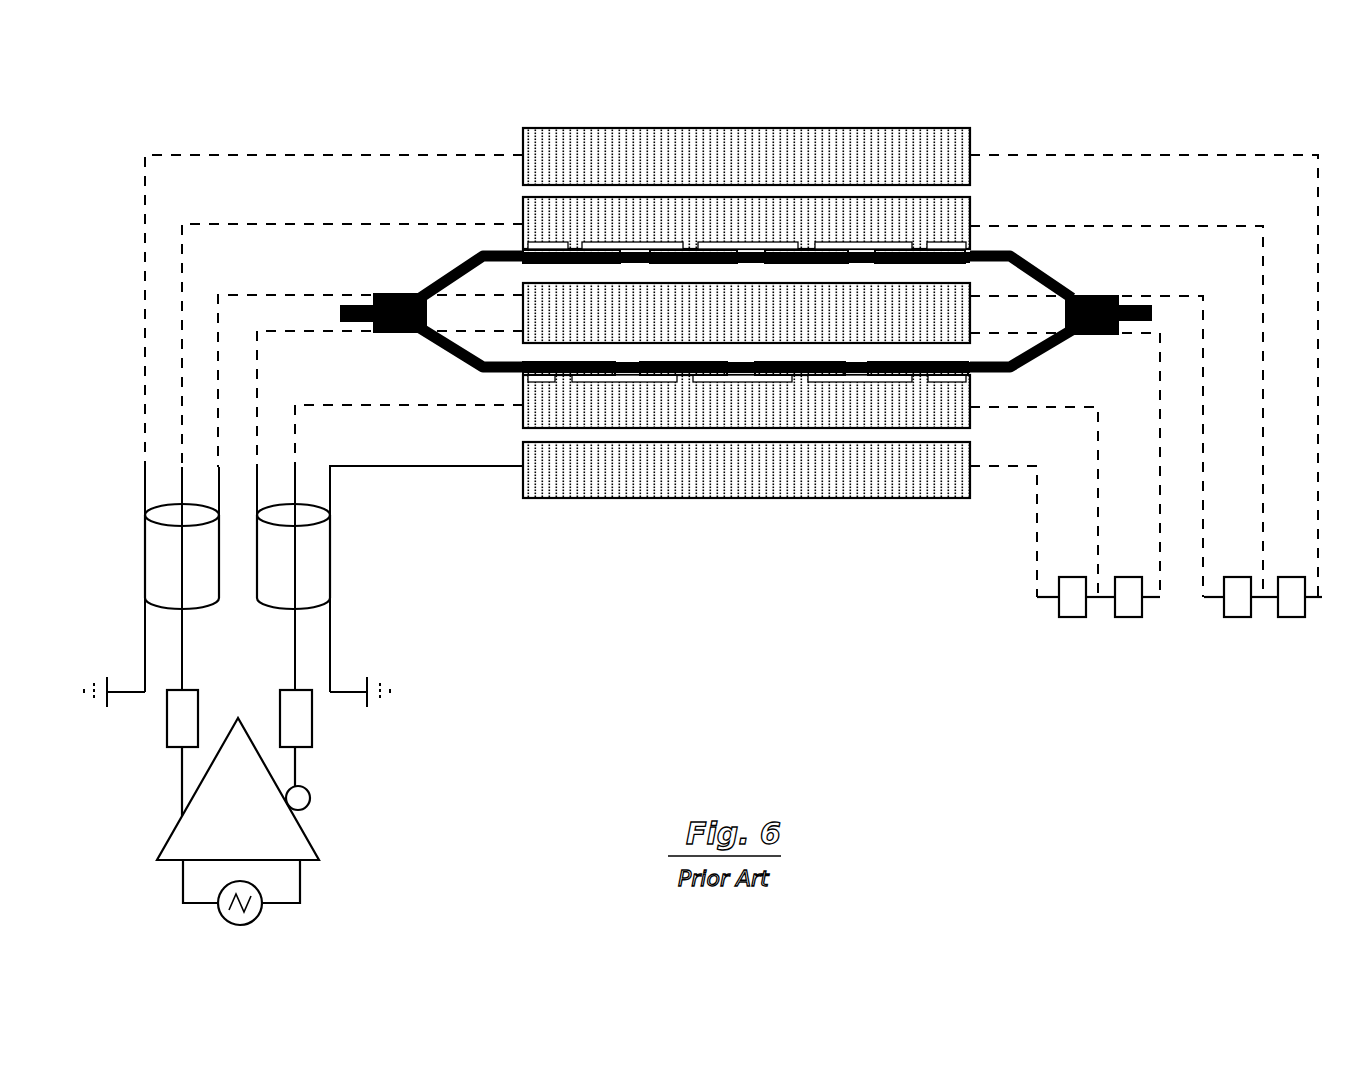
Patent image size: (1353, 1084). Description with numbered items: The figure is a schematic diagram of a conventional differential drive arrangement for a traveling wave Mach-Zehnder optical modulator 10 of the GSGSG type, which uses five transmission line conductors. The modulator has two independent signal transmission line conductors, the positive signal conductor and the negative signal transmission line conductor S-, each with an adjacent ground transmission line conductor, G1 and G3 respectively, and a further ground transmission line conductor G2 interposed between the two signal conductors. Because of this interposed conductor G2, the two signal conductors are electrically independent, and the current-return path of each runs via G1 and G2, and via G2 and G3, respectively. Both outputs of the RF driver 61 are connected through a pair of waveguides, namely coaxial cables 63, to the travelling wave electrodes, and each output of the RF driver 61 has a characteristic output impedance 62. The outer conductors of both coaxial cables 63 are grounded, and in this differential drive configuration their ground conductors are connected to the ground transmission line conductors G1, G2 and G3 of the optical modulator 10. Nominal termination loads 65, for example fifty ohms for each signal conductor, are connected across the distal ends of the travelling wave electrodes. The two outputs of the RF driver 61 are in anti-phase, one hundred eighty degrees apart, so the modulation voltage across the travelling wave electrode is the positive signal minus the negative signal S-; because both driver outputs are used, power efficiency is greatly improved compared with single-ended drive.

The optical modulator 10 is at (501, 121).
The ground transmission line conductor G1 is at (897, 128).
The ground transmission line conductor G2 is at (975, 283).
The signal transmission line conductor S- is at (970, 398).
The ground transmission line conductor G3 is at (800, 500).
The RF driver 61 is at (225, 827).
The characteristic output impedance 62 is at (167, 714).
The coaxial cables 63 is at (158, 562).
The termination loads 65 is at (1101, 647).